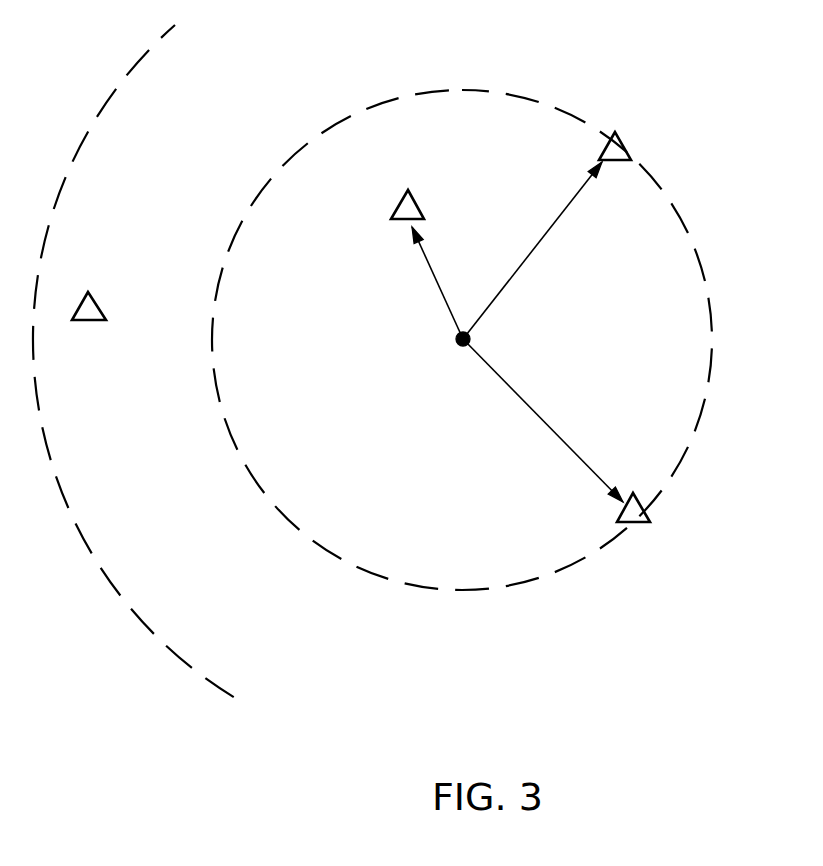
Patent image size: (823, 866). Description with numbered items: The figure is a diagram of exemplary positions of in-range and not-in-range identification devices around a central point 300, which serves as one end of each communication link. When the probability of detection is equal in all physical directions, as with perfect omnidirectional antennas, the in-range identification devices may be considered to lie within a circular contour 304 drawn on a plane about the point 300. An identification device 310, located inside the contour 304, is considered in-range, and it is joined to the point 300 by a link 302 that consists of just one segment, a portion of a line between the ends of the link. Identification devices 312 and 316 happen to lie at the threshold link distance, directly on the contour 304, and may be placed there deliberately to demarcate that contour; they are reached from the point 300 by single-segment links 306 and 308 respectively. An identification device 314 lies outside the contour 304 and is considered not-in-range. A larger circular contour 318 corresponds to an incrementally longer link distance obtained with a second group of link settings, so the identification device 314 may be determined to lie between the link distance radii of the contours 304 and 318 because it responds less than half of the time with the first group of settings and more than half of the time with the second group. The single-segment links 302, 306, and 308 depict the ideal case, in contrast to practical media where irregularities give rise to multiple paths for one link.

The link end point 300 is at (457, 342).
The link 302 is at (430, 272).
The circular contour 304 is at (485, 90).
The link 306 is at (535, 250).
The link 308 is at (540, 410).
The identification device 310 is at (417, 202).
The identification device 312 is at (620, 137).
The identification device 314 is at (89, 320).
The identification device 316 is at (655, 498).
The circular contour 318 is at (135, 65).